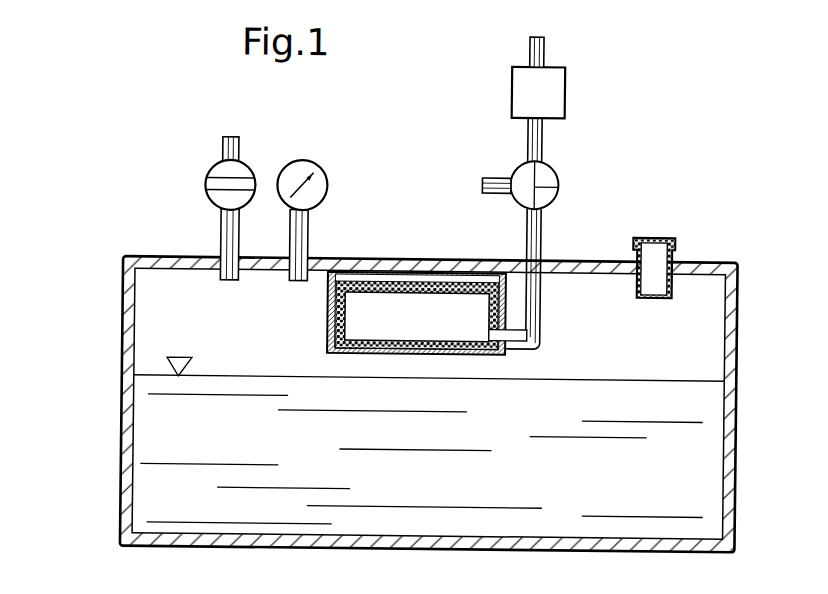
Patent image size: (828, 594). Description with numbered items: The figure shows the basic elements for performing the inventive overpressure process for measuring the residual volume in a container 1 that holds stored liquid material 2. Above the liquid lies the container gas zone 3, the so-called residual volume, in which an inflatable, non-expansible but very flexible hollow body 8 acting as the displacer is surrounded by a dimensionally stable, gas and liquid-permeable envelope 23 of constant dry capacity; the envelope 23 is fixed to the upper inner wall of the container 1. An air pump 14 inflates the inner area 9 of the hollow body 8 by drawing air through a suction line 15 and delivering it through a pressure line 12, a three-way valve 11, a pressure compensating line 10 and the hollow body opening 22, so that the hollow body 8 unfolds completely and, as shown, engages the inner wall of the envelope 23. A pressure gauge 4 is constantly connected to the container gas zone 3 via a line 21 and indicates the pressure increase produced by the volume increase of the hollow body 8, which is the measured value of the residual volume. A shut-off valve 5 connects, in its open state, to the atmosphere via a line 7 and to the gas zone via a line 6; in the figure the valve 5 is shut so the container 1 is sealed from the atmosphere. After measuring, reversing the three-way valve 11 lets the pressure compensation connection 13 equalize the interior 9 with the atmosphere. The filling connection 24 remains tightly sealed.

The container 1 is at (736, 489).
The stored liquid material 2 is at (697, 437).
The container gas zone 3 is at (706, 324).
The pressure gauge 4 is at (315, 169).
The shut-off valve 5 is at (209, 172).
The line 6 is at (218, 237).
The line 7 is at (219, 147).
The hollow body 8 is at (417, 260).
The inner area of hollow body 9 is at (447, 308).
The pressure compensating line 10 is at (540, 236).
The three-way valve 11 is at (552, 171).
The pressure line 12 is at (527, 137).
The pressure compensation connection 13 is at (484, 176).
The air pump 14 is at (562, 96).
The suction line 15 is at (541, 51).
The line 21 is at (276, 186).
The hollow body opening 22 is at (486, 332).
The envelope 23 is at (397, 282).
The filling connection 24 is at (665, 235).